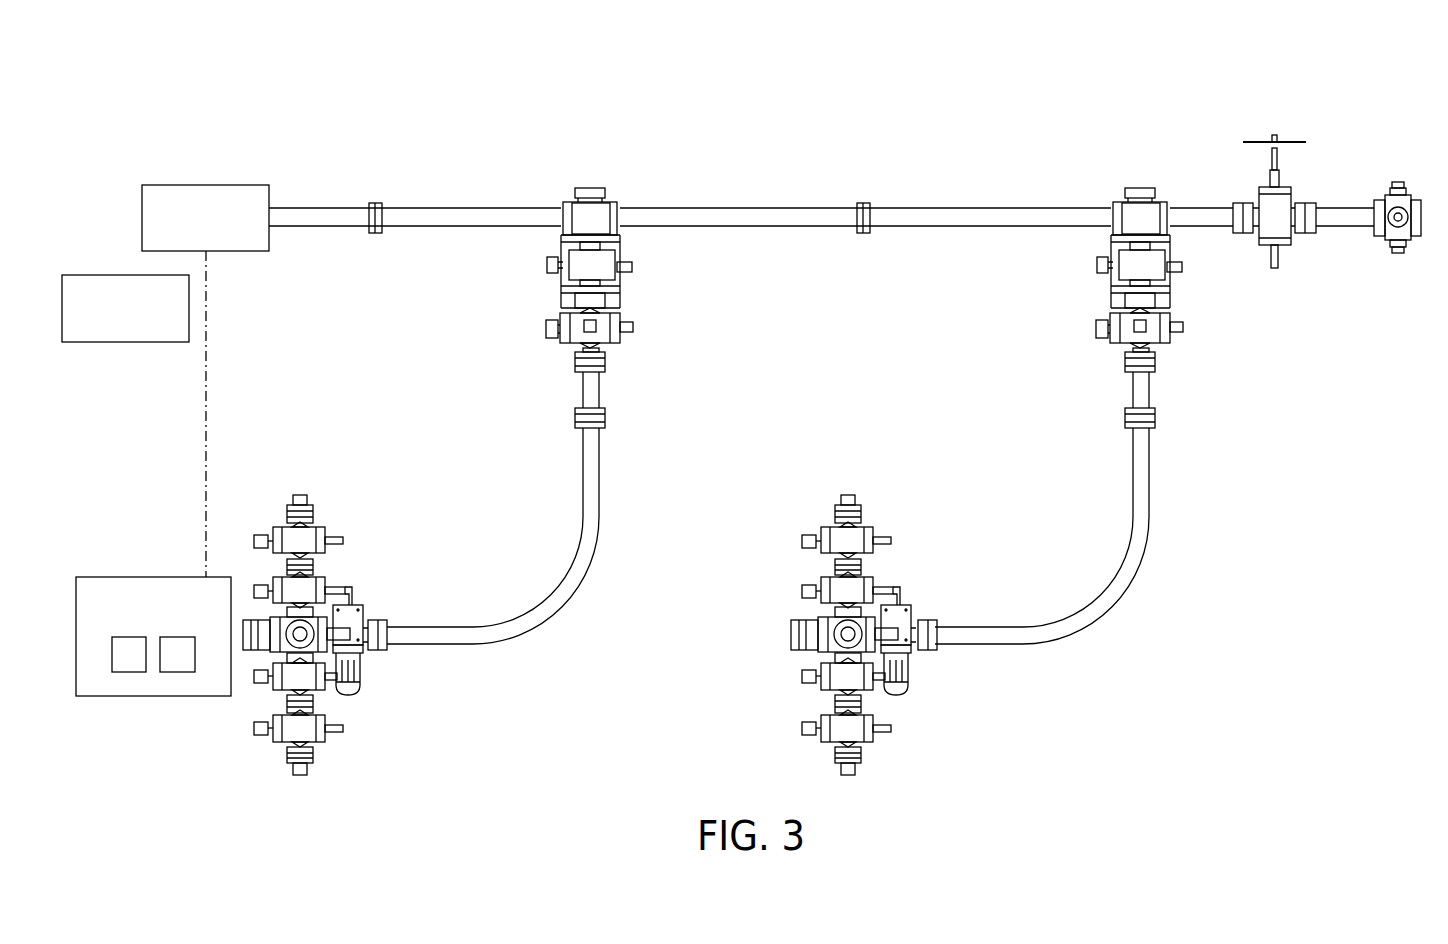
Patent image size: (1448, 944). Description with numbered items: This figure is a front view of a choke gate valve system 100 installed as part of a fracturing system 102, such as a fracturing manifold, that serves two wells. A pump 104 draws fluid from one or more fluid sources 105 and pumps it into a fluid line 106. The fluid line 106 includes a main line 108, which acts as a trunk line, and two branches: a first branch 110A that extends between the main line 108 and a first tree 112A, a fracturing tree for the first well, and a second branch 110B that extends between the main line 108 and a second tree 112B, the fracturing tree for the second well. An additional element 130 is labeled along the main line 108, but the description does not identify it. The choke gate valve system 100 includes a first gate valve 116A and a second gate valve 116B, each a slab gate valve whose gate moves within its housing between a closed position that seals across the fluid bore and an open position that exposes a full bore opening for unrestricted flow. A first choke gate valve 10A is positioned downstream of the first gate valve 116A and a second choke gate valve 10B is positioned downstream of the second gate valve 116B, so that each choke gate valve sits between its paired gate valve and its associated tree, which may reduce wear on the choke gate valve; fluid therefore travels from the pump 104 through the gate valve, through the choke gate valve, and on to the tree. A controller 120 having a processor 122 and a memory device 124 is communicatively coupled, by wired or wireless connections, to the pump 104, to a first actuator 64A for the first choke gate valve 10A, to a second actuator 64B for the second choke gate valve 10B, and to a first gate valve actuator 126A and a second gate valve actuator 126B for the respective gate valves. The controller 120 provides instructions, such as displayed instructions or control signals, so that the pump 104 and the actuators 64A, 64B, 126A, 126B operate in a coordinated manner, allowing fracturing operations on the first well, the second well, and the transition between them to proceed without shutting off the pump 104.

The choke gate valve system 100 is at (1387, 118).
The fracturing system 102 is at (1342, 426).
The pump 104 is at (237, 251).
The fluid sources 105 is at (124, 342).
The fluid line 106 is at (257, 156).
The main line 108 is at (412, 206).
The conduit coupling 130 is at (577, 176).
The first gate valve 116A is at (605, 250).
The second gate valve 116B is at (1080, 251).
The first gate valve actuator 126A is at (546, 266).
The second gate valve actuator 126B is at (1096, 266).
The first choke gate valve 10A is at (595, 348).
The second choke gate valve 10B is at (1137, 367).
The first actuator 64A is at (557, 339).
The second actuator 64B is at (1107, 339).
The first branch 110A is at (583, 468).
The second branch 110B is at (1133, 510).
The first tree 112A is at (367, 566).
The second tree 112B is at (902, 572).
The controller 120 is at (153, 497).
The processor 122 is at (130, 672).
The memory device 124 is at (178, 672).